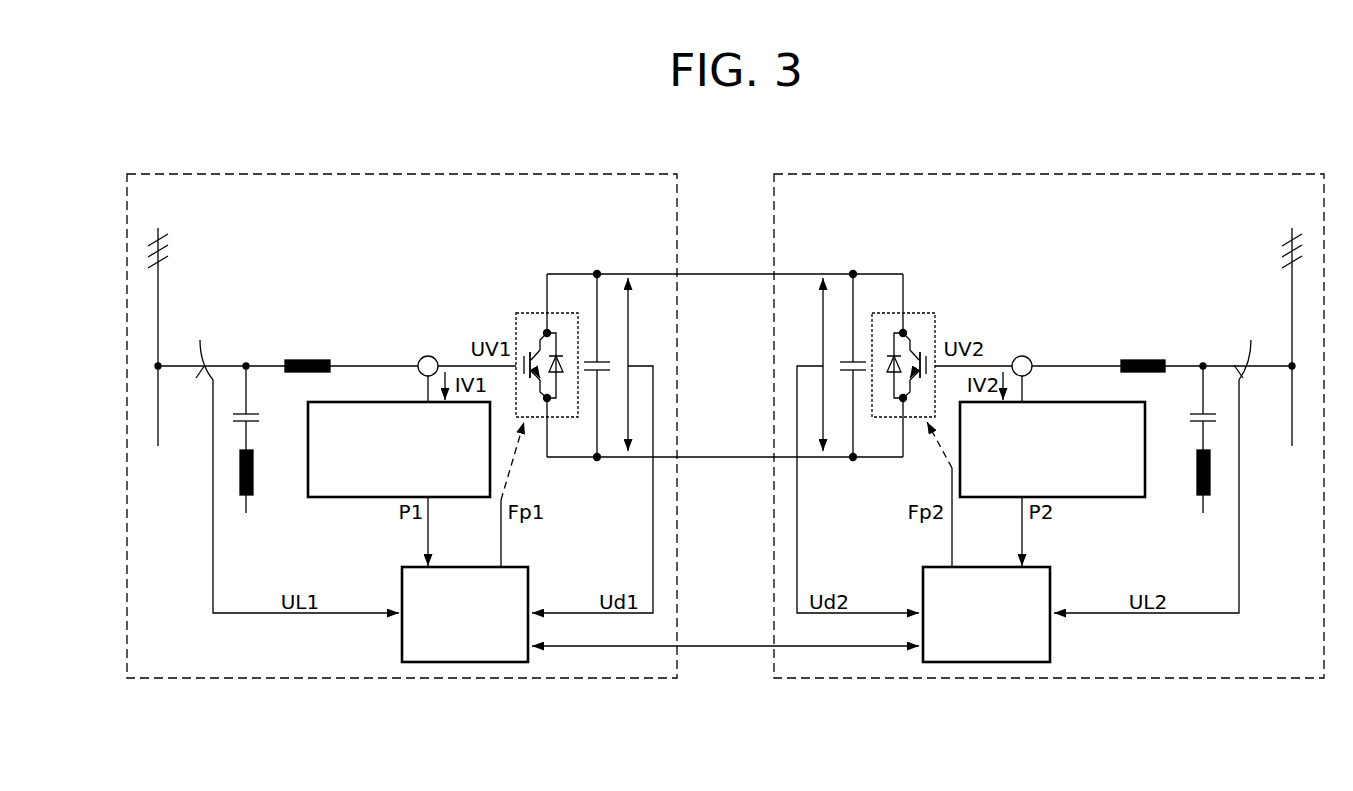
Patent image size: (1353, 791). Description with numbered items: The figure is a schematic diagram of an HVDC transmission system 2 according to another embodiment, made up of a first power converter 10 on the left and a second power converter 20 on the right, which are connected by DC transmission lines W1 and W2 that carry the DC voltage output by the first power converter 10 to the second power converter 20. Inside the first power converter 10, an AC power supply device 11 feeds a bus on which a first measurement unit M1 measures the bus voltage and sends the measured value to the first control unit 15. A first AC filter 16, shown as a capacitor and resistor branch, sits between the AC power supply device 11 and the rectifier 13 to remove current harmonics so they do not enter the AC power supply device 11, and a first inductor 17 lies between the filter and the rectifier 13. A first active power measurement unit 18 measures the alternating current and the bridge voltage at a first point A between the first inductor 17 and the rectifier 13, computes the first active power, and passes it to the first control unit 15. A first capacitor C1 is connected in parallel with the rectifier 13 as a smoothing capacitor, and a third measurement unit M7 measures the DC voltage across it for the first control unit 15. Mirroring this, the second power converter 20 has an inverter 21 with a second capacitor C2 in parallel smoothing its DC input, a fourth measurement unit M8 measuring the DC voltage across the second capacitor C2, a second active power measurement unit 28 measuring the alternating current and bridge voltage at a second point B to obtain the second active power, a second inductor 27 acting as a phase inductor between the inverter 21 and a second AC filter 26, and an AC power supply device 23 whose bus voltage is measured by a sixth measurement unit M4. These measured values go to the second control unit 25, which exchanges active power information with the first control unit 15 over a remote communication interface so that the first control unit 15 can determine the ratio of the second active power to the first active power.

The HVDC transmission system 2 is at (156, 102).
The first power converter 10 is at (183, 213).
The second power converter 20 is at (1219, 213).
The AC power supply device 11 is at (158, 418).
The rectifier 13 is at (528, 313).
The first control unit 15 is at (465, 662).
The first AC filter 16 is at (258, 437).
The first inductor 17 is at (308, 360).
The first active power measurement unit 18 is at (378, 402).
The inverter 21 is at (923, 313).
The AC power supply device 23 is at (1292, 418).
The second control unit 25 is at (987, 662).
The second AC filter 26 is at (1192, 437).
The second inductor 27 is at (1143, 360).
The second active power measurement unit 28 is at (1080, 402).
The first measurement unit M1 is at (200, 340).
The sixth measurement unit M4 is at (1251, 340).
The third measurement unit M7 is at (628, 366).
The fourth measurement unit M8 is at (823, 366).
The first capacitor C1 is at (592, 360).
The second capacitor C2 is at (858, 360).
The first point A is at (428, 356).
The second point B is at (1022, 356).
The DC transmission line W1 is at (727, 273).
The DC transmission line W2 is at (726, 458).